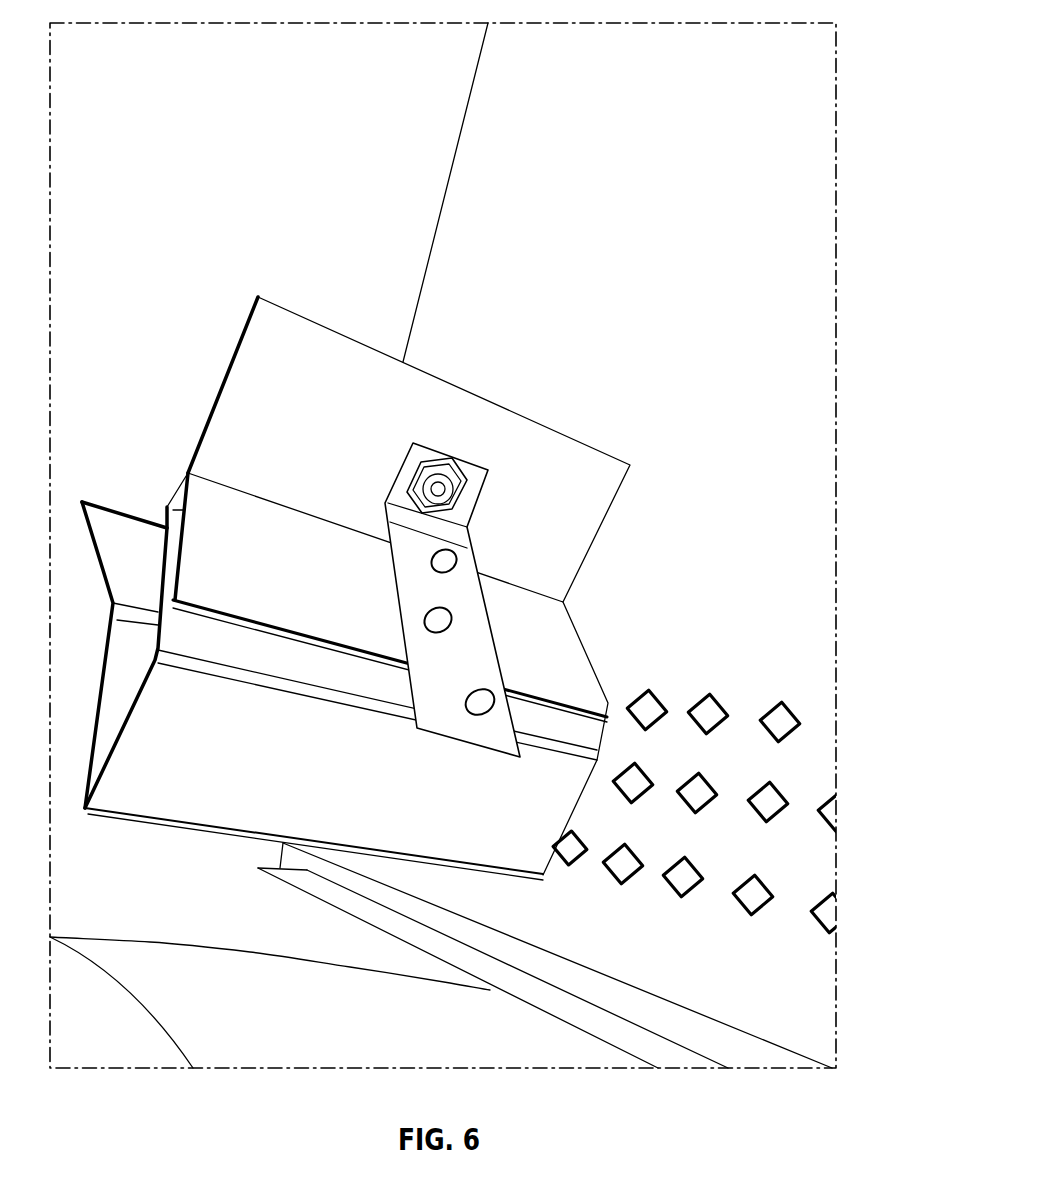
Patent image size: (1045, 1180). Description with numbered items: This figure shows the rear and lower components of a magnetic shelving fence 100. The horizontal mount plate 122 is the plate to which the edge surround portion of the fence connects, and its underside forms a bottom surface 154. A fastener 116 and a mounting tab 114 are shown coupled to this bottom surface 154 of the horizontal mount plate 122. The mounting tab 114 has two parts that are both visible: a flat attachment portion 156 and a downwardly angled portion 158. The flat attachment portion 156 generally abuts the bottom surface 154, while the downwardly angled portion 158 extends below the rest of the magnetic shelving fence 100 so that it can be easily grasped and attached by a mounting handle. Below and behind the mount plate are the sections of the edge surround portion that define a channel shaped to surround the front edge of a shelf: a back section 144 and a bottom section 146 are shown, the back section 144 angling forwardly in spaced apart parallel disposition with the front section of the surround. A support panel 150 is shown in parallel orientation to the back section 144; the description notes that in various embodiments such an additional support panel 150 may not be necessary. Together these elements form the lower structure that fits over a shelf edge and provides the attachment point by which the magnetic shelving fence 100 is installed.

The magnetic shelving fence 100 is at (668, 153).
The horizontal mount plate 122 is at (388, 375).
The bottom surface 154 is at (472, 412).
The fastener 116 is at (447, 492).
The flat attachment portion 156 is at (463, 508).
The mounting tab 114 is at (457, 582).
The downwardly angled portion 158 is at (463, 633).
The support panel 150 is at (557, 643).
The back section 144 is at (565, 728).
The bottom section 146 is at (513, 800).